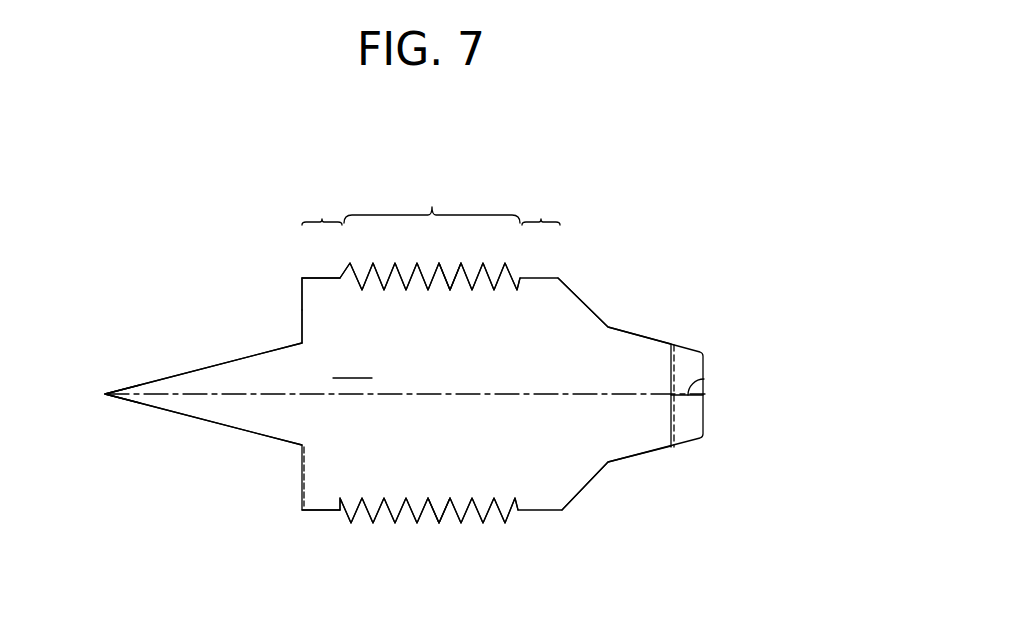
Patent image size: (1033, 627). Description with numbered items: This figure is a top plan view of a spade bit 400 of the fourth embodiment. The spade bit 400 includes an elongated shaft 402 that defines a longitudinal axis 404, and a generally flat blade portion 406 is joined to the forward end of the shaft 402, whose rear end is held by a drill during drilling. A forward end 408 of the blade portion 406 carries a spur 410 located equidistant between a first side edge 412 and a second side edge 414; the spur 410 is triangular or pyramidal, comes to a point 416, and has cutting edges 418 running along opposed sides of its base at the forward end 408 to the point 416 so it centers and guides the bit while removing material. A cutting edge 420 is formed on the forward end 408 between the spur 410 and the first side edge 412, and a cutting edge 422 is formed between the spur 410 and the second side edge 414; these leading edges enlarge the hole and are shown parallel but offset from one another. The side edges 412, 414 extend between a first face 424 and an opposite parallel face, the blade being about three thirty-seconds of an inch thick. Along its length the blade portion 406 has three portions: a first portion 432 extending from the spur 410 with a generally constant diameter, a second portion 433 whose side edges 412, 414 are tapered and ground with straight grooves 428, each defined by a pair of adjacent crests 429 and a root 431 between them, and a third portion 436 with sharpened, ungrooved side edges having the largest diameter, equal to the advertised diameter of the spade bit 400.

The spade bit 400 is at (640, 278).
The elongated shaft 402 is at (687, 358).
The longitudinal axis 404 is at (705, 375).
The blade portion 406 is at (551, 318).
The forward end 408 is at (302, 283).
The spur 410 is at (208, 405).
The first side edge 412 is at (340, 268).
The second side edge 414 is at (333, 512).
The point 416 is at (103, 393).
The cutting edges 418 is at (175, 375).
The cutting edge 420 is at (302, 315).
The cutting edge 422 is at (300, 478).
The first face 424 is at (352, 364).
The grooves 428 is at (396, 278).
The crests 429 is at (458, 265).
The root 431 is at (450, 287).
The first portion 432 is at (322, 207).
The second portion 433 is at (432, 199).
The third portion 436 is at (541, 209).